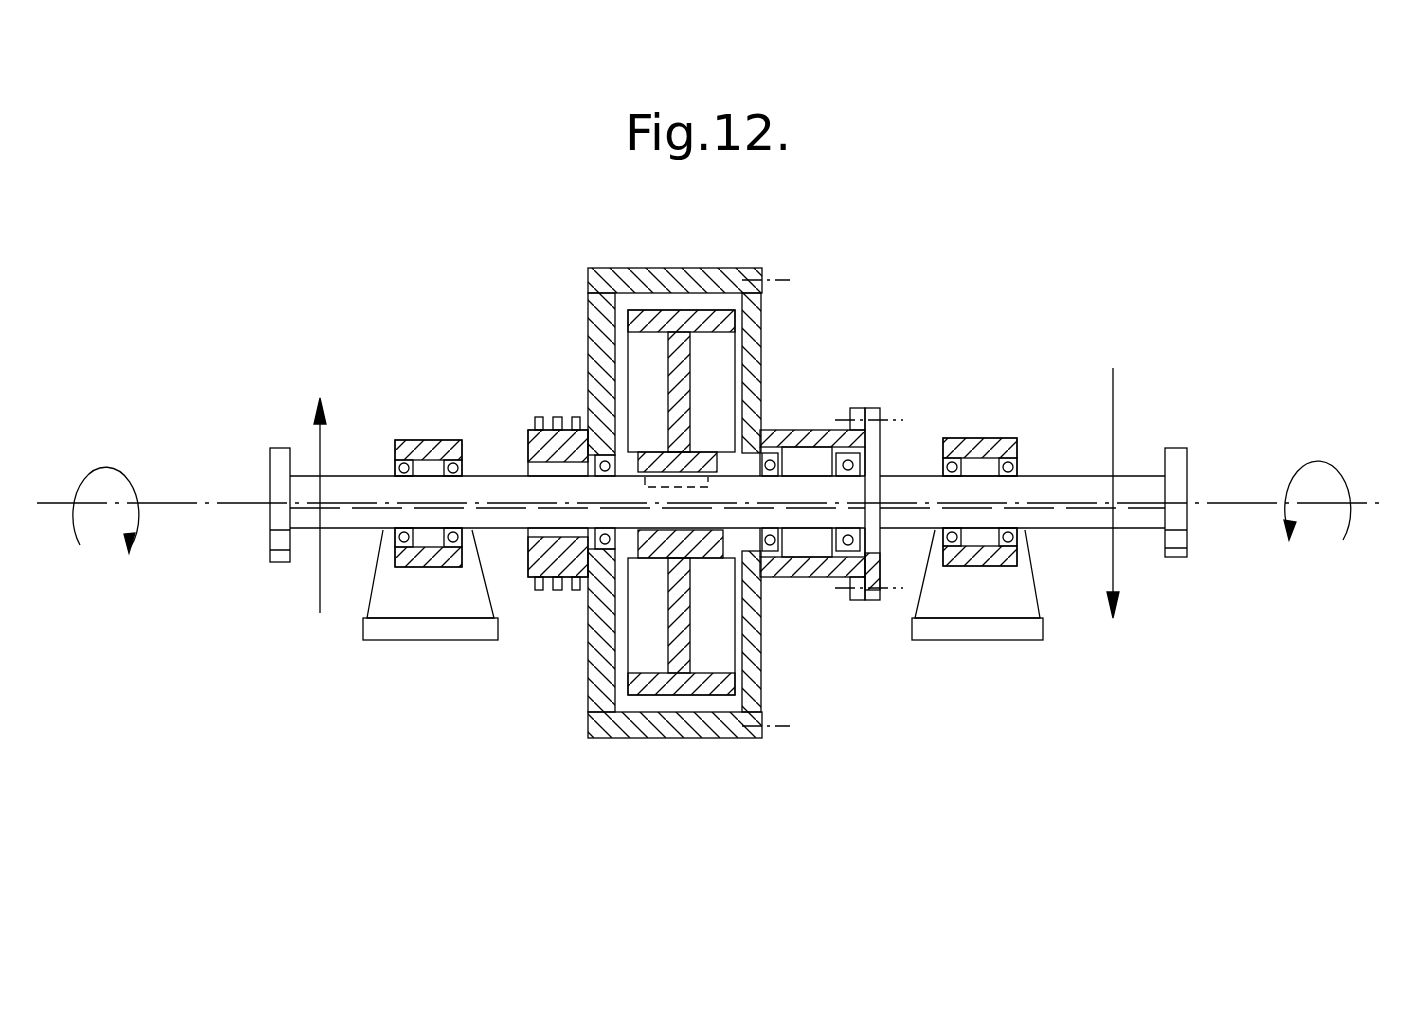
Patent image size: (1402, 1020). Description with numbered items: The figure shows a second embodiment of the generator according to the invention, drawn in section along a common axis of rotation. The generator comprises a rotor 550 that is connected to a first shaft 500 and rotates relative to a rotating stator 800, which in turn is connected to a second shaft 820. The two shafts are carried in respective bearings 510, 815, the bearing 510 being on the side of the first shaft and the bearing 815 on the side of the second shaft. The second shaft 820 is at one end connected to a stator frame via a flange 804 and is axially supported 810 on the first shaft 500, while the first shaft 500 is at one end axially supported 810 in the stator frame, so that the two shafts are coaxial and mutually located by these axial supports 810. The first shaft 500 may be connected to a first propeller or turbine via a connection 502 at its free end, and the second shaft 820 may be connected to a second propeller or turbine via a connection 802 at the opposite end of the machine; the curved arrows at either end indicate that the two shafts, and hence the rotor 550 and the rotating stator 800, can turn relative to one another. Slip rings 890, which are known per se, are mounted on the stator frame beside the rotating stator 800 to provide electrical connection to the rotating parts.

The first shaft 500 is at (362, 514).
The connection 502 is at (271, 458).
The bearing 510 is at (420, 442).
The rotor 550 is at (697, 317).
The rotating stator 800 is at (632, 273).
The connection 802 is at (1187, 450).
The flange 804 is at (883, 583).
The axial support 810 is at (766, 446).
The bearing 815 is at (1006, 440).
The second shaft 820 is at (1060, 517).
The slip rings 890 is at (555, 432).